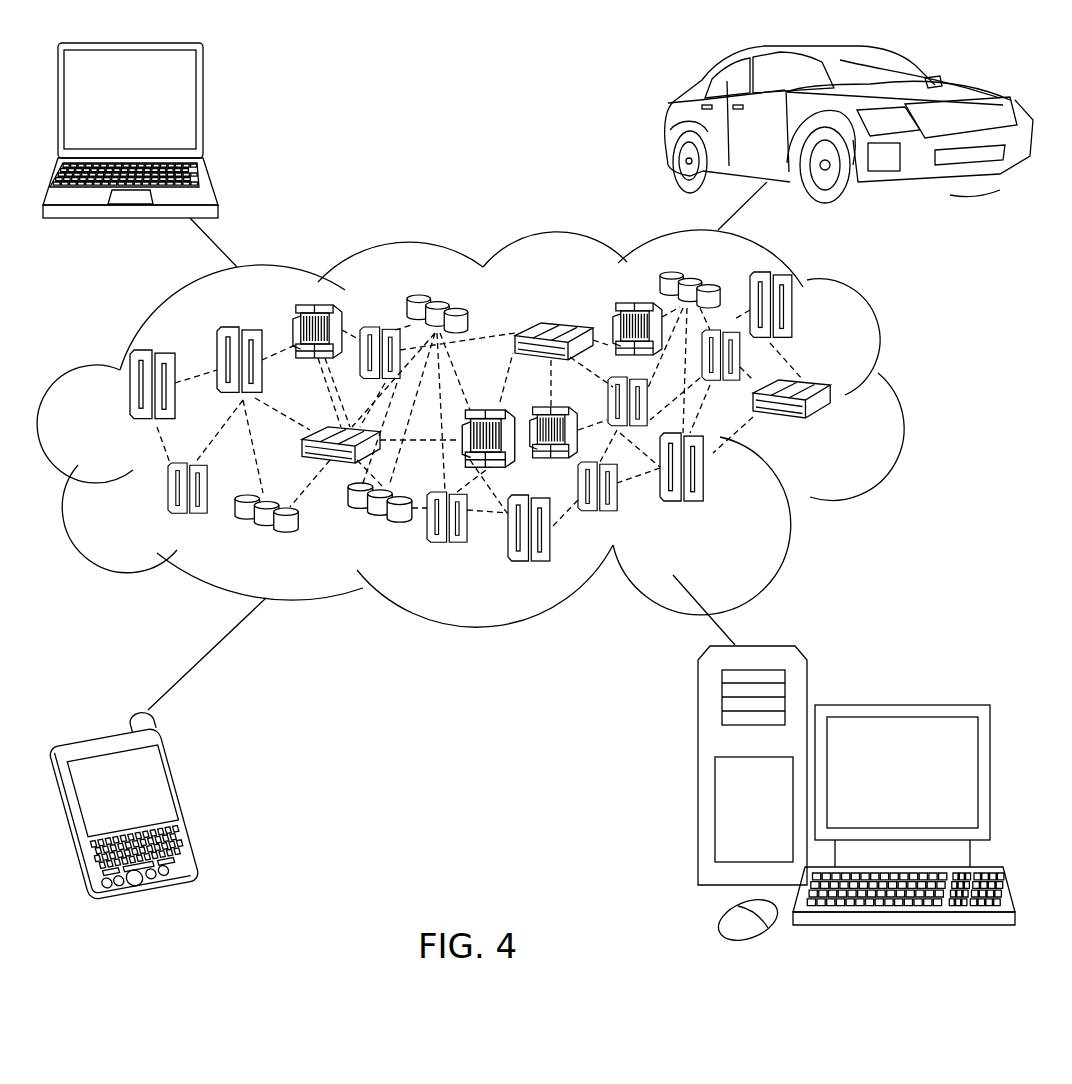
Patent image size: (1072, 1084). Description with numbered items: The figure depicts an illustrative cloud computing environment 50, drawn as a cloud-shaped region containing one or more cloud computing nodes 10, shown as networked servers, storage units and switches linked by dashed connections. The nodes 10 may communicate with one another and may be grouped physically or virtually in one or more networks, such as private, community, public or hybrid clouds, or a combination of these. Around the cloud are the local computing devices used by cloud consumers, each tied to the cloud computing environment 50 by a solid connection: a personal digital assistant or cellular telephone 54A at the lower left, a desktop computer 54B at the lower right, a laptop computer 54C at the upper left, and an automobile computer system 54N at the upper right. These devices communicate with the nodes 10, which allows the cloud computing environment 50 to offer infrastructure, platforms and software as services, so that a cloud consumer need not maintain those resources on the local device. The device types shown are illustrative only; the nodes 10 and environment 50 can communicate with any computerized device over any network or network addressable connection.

The cloud computing node 10 is at (838, 430).
The cloud computing environment 50 is at (898, 398).
The personal digital assistant or cellular telephone 54A is at (190, 805).
The desktop computer 54B is at (900, 705).
The laptop computer 54C is at (203, 108).
The automobile computer system 54N is at (668, 127).